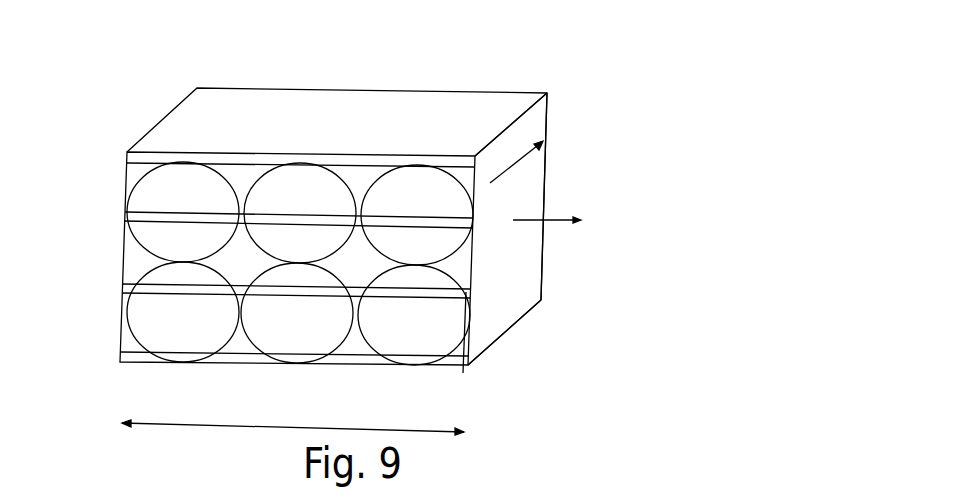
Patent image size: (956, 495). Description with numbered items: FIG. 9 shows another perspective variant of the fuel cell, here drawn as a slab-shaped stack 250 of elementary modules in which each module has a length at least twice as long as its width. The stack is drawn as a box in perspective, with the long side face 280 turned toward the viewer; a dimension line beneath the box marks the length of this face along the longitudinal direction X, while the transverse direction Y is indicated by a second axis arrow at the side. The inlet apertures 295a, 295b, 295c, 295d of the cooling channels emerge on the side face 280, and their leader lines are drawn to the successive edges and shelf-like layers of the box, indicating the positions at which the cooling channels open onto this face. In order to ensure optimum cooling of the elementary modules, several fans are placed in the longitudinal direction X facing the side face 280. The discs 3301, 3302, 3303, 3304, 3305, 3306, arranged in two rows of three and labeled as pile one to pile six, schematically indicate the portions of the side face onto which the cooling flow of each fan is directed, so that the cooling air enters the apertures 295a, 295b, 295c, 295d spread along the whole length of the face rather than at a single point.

The storage unit / container 250 is at (514, 76).
The side face 280 is at (357, 347).
The cooling channel inlet aperture 295a is at (463, 172).
The cooling channel inlet aperture 295b is at (475, 225).
The cooling channel inlet aperture 295c is at (480, 293).
The cooling channel inlet aperture 295d is at (463, 373).
The disc 3301 is at (148, 204).
The disc 3302 is at (313, 190).
The disc 3303 is at (426, 190).
The disc 3304 is at (148, 324).
The disc 3305 is at (293, 343).
The disc 3306 is at (460, 293).
The longitudinal direction X is at (560, 222).
The Y axis direction Y is at (508, 175).